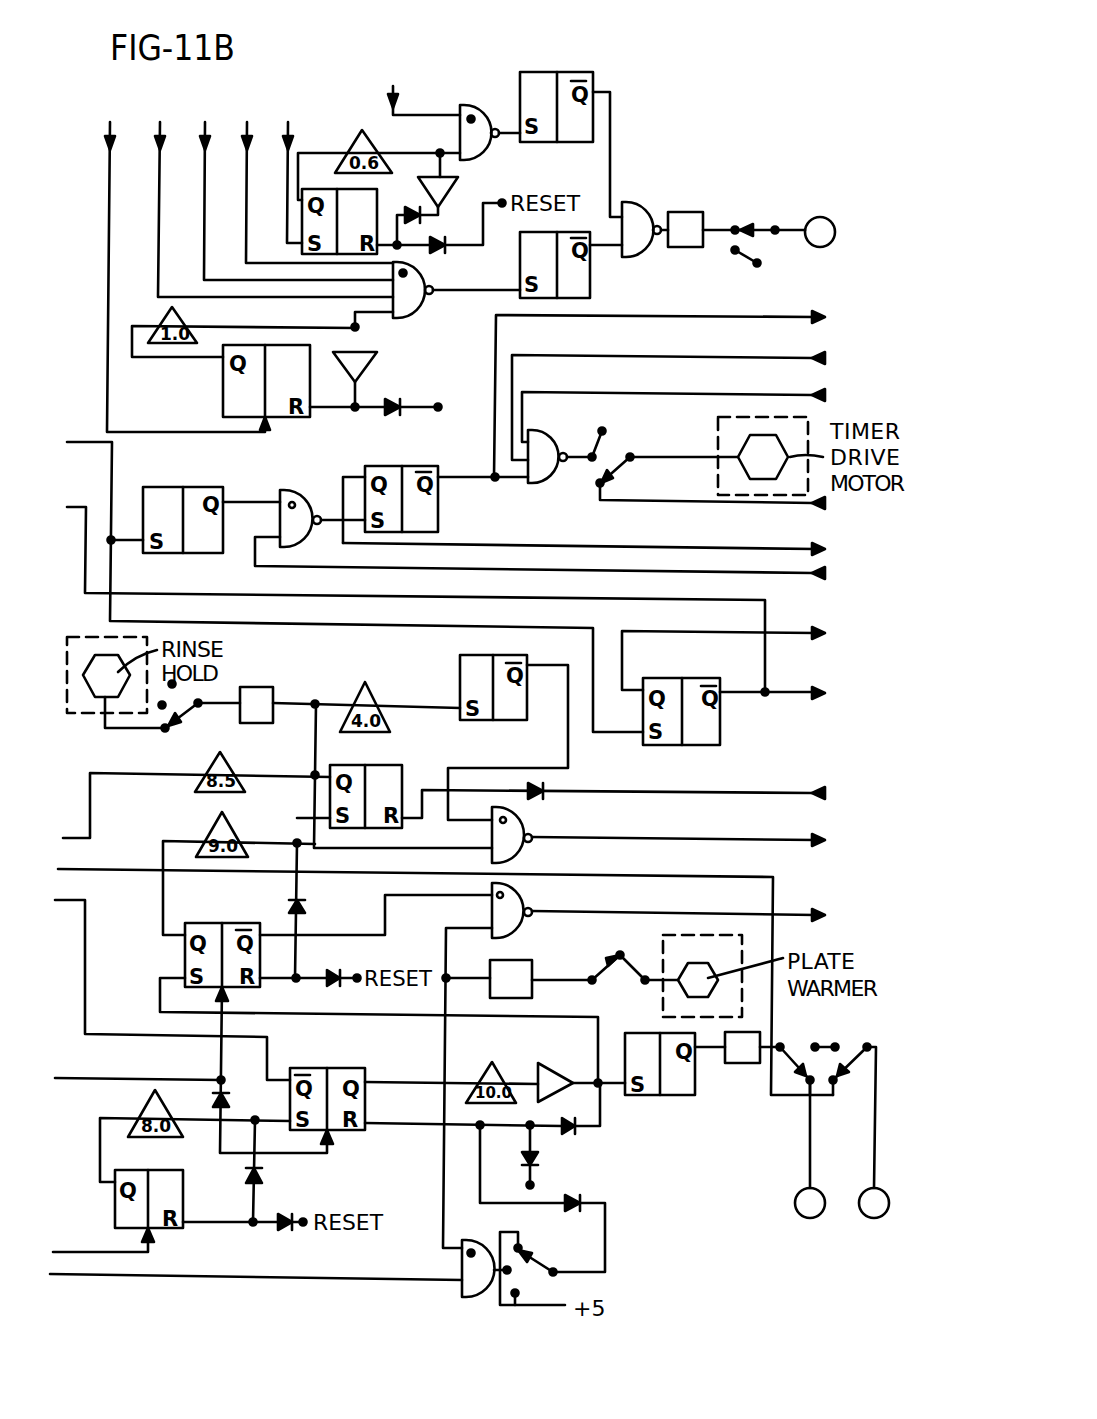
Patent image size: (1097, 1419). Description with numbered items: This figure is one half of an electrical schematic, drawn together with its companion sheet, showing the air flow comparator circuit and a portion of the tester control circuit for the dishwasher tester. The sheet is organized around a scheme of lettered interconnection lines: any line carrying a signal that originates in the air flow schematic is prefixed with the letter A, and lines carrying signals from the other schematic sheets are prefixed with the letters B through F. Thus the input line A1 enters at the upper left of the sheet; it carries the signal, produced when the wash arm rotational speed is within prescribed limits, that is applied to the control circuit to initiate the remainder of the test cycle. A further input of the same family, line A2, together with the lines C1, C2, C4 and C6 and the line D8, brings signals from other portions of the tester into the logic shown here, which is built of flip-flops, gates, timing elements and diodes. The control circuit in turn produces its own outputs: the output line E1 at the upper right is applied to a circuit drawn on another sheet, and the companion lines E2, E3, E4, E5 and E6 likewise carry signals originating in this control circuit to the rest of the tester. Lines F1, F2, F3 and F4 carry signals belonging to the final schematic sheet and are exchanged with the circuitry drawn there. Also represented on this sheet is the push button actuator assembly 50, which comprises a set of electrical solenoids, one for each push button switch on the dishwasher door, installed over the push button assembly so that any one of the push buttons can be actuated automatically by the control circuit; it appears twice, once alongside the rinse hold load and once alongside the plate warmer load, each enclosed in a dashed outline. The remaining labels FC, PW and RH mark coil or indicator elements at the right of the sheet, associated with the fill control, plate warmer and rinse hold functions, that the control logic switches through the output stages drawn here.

The push button actuator assembly 50 is at (91, 710).
The output line E1 is at (678, 391).
The line E2 is at (603, 548).
The line E3 is at (742, 655).
The line E4 is at (791, 693).
The line E5 is at (697, 840).
The line E6 is at (697, 916).
The line F1 is at (732, 500).
The line F2 is at (687, 403).
The line F3 is at (183, 264).
The line F4 is at (632, 799).
The line A1 is at (290, 169).
The line A2 is at (693, 412).
The line C1 is at (420, 88).
The line C2 is at (270, 196).
The line C4 is at (292, 188).
The line C6 is at (313, 179).
The line D8 is at (560, 561).
The FC fill control coil FC is at (818, 218).
The PW plate warmer coil PW is at (806, 1213).
The RH rinse hold coil RH is at (875, 1218).